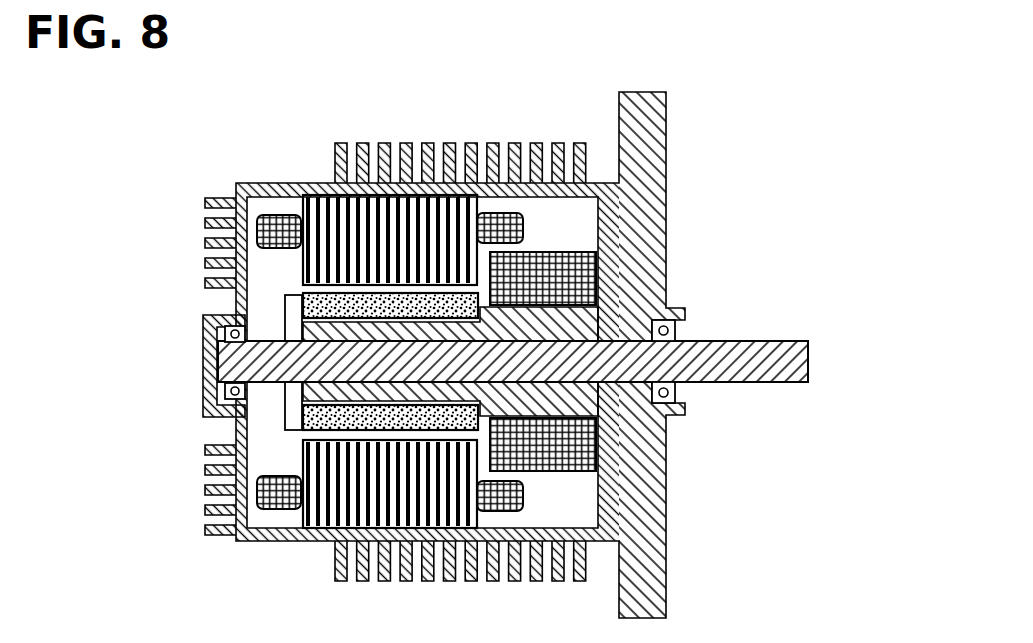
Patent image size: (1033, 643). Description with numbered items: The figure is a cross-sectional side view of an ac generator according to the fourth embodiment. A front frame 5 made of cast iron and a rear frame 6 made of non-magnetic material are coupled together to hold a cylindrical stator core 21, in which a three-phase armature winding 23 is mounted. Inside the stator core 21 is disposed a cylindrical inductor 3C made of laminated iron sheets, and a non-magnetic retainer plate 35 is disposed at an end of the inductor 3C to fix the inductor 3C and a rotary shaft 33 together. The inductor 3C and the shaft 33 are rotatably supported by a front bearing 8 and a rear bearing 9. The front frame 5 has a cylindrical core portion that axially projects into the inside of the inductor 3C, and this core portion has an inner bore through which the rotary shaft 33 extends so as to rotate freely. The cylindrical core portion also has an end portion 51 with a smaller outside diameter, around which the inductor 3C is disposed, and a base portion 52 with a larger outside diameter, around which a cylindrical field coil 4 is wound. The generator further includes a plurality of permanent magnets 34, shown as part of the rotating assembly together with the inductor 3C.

The cylindrical inductor 3C is at (236, 196).
The front frame 5 is at (562, 148).
The rear frame 6 is at (236, 298).
The stator core 21 is at (302, 207).
The three-phase armature winding 23 is at (523, 218).
The cylindrical field coil 4 is at (592, 258).
The base portion 52 is at (570, 315).
The permanent magnets 34 is at (288, 293).
The non-magnetic retainer plate 35 is at (290, 417).
The rotary shaft 33 is at (758, 348).
The front bearing 8 is at (677, 325).
The end portion 51 is at (216, 368).
The rear bearing 9 is at (222, 336).